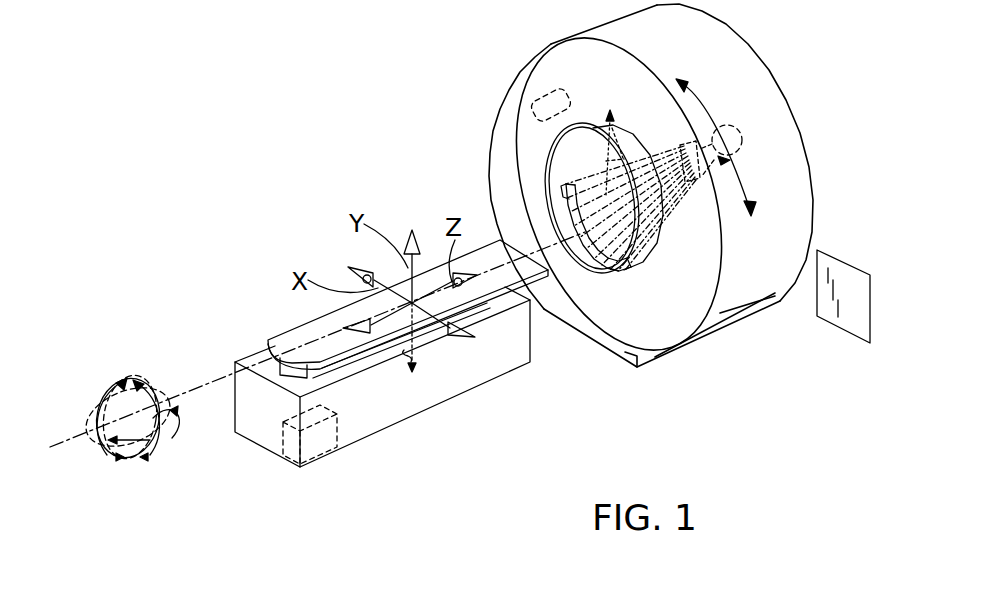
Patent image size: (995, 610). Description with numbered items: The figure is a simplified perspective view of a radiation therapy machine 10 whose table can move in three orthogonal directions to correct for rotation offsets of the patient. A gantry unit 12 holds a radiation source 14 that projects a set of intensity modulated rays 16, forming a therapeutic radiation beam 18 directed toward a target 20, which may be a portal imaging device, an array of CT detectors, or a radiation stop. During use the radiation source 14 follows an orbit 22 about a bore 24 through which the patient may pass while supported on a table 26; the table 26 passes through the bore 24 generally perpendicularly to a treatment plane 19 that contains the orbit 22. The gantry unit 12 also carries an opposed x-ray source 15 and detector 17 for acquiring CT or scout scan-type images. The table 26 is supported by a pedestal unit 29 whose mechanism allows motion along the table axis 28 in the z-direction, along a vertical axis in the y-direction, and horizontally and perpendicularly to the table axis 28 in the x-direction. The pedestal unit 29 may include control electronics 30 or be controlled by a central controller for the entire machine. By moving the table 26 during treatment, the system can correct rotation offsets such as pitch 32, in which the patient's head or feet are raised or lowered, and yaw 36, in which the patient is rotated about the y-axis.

The radiation therapy machine 10 is at (290, 160).
The gantry unit 12 is at (789, 190).
The radiation source 14 is at (740, 134).
The x-ray source 15 is at (537, 94).
The intensity modulated rays 16 is at (614, 141).
The detector 17 is at (644, 258).
The therapeutic radiation beam 18 is at (652, 240).
The treatment plane 19 is at (857, 312).
The target 20 is at (567, 207).
The orbit 22 is at (712, 112).
The bore 24 is at (597, 277).
The table 26 is at (288, 338).
The table axis 28 is at (62, 446).
The pedestal unit 29 is at (450, 383).
The control electronics 30 is at (330, 448).
The pitch 32 is at (97, 423).
The yaw 36 is at (172, 437).